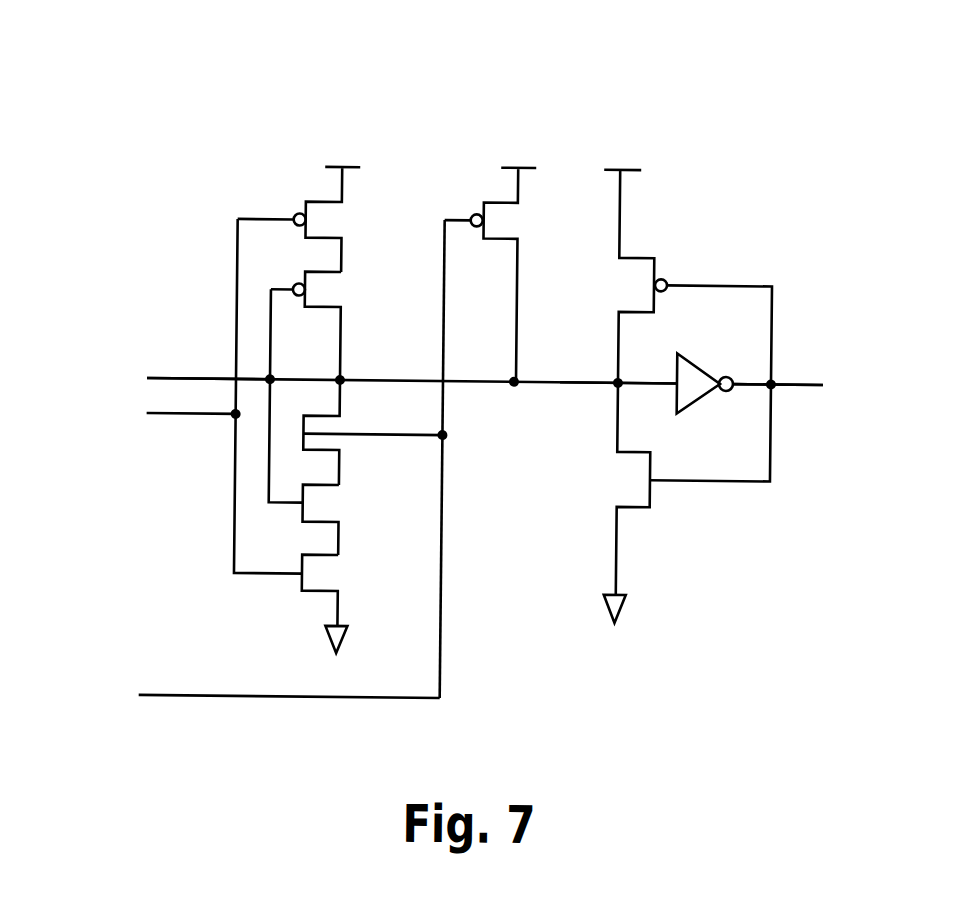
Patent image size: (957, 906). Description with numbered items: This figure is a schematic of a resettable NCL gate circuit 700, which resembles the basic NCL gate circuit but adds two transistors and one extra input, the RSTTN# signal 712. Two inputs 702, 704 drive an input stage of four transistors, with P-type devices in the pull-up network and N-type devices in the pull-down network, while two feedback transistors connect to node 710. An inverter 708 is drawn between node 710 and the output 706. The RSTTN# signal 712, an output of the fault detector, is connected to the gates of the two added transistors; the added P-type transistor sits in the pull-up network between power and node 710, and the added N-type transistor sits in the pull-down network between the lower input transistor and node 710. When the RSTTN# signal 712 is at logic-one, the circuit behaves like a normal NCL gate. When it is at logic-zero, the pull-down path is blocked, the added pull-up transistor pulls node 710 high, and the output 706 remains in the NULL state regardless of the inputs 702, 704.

The resettable NCL gate circuit 700 is at (842, 127).
The input 702 is at (199, 380).
The input 704 is at (200, 416).
The output 706 is at (793, 379).
The inverter 708 is at (688, 358).
The node 710 is at (613, 384).
The RSTTN# signal 712 is at (197, 698).